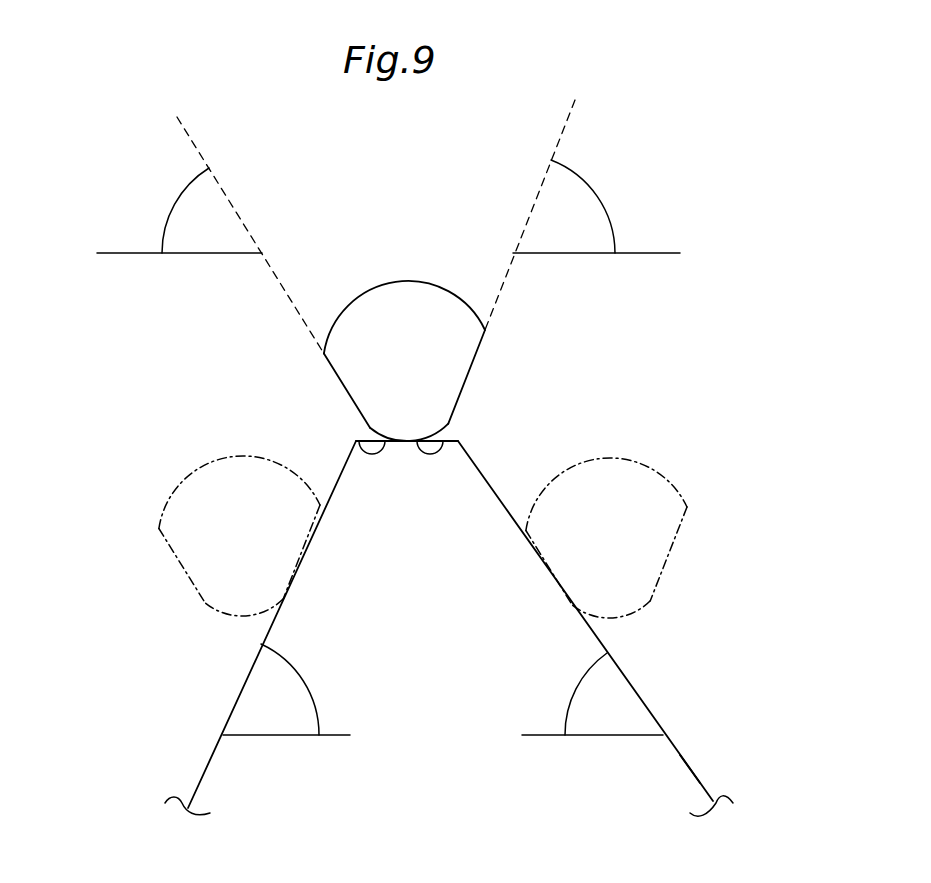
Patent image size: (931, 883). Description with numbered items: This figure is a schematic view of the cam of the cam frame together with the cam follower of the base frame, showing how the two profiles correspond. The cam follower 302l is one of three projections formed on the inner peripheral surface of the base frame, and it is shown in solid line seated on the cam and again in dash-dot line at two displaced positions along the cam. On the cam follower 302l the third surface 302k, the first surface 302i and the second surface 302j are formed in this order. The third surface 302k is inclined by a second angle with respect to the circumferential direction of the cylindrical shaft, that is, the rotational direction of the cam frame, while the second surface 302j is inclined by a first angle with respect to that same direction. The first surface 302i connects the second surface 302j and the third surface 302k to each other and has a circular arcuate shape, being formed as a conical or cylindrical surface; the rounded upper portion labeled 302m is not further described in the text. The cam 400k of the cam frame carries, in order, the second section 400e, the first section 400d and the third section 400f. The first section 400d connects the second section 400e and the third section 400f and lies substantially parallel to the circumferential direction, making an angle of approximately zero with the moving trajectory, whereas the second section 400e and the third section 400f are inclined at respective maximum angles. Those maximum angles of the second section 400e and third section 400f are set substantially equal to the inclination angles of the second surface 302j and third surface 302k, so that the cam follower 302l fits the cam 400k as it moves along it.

The top arc surface of seal member 302m is at (398, 281).
The third surface 302k is at (326, 355).
The cam follower 302l is at (485, 348).
The second surface 302j is at (467, 380).
The first surface 302i is at (445, 434).
The first section 400d is at (356, 441).
The second section 400e is at (210, 760).
The third section 400f is at (698, 782).
The cam 400k is at (690, 764).